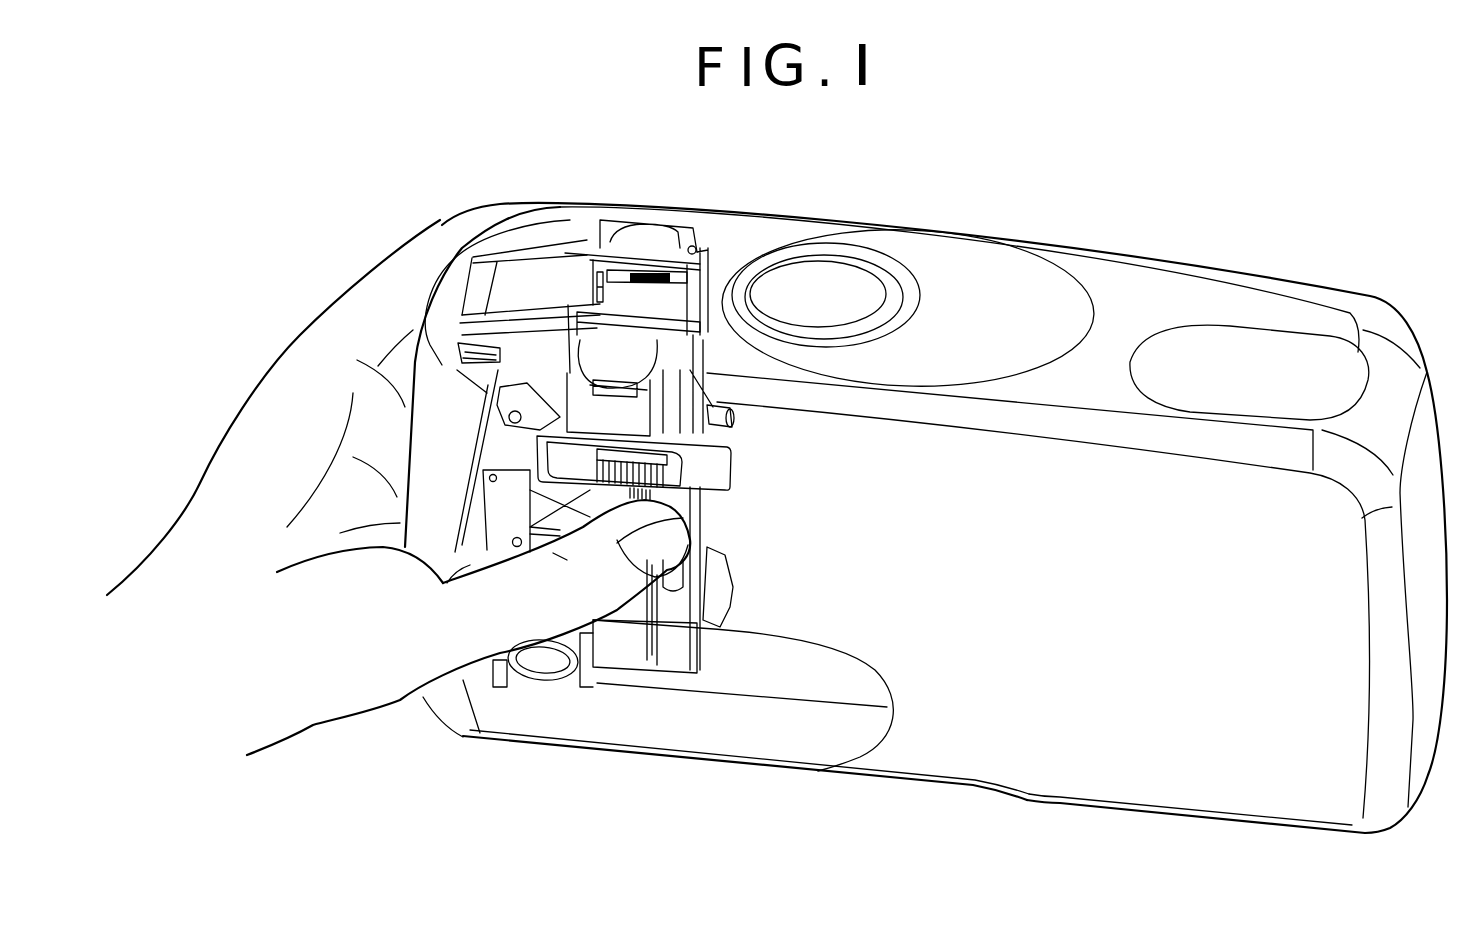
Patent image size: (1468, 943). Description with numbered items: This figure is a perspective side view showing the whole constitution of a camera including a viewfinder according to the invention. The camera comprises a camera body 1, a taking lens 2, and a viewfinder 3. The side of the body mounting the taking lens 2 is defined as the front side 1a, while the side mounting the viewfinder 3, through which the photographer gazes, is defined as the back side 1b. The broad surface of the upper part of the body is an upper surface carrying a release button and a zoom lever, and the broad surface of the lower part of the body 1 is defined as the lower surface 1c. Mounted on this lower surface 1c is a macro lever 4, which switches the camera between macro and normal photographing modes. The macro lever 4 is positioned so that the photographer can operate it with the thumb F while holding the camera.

The camera body 1 is at (1128, 245).
The front side 1a is at (1167, 287).
The back side 1b is at (973, 786).
The lower surface 1c is at (1092, 775).
The taking lens 2 is at (813, 277).
The viewfinder 3 is at (585, 245).
The macro lever 4 is at (667, 493).
The thumb F is at (610, 593).